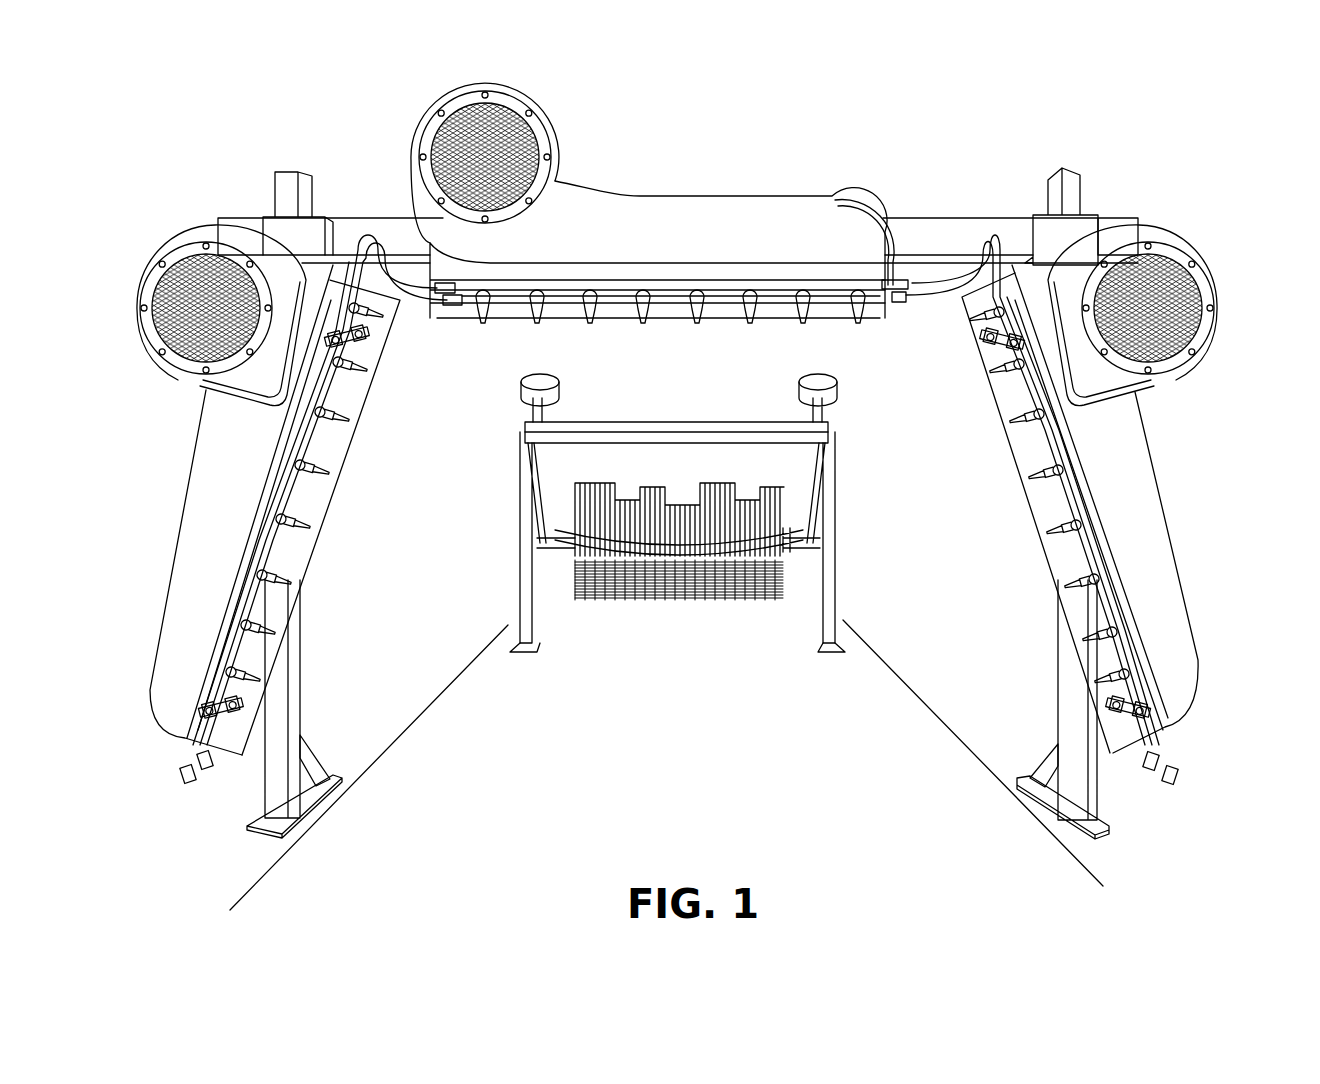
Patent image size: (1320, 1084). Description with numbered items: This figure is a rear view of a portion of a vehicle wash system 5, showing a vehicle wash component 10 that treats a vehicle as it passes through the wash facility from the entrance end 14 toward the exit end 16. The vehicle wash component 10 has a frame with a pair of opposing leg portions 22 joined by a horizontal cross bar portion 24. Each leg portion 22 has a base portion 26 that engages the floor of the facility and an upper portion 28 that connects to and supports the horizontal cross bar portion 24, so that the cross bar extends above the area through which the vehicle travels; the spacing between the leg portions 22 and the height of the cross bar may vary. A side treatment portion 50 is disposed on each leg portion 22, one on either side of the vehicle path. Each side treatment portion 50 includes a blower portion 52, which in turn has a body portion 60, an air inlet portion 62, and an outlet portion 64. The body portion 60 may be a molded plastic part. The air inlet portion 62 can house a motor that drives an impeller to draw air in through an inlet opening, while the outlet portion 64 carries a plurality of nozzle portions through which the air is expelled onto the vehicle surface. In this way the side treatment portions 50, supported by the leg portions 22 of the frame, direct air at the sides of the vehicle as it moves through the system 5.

The vehicle wash component 10 is at (768, 142).
The horizontal cross bar portion 24 is at (930, 236).
The upper portion 28 is at (300, 198).
The side treatment portion 50 is at (210, 483).
The body portion 60 is at (1130, 440).
The air inlet portion 62 is at (1186, 290).
The blower portion 52 is at (310, 545).
The outlet portion 64 is at (1045, 557).
The vehicle wash system 5 is at (852, 384).
The entrance end 14 is at (677, 610).
The leg portion 22 is at (302, 714).
The base portion 26 is at (322, 752).
The exit end 16 is at (778, 796).